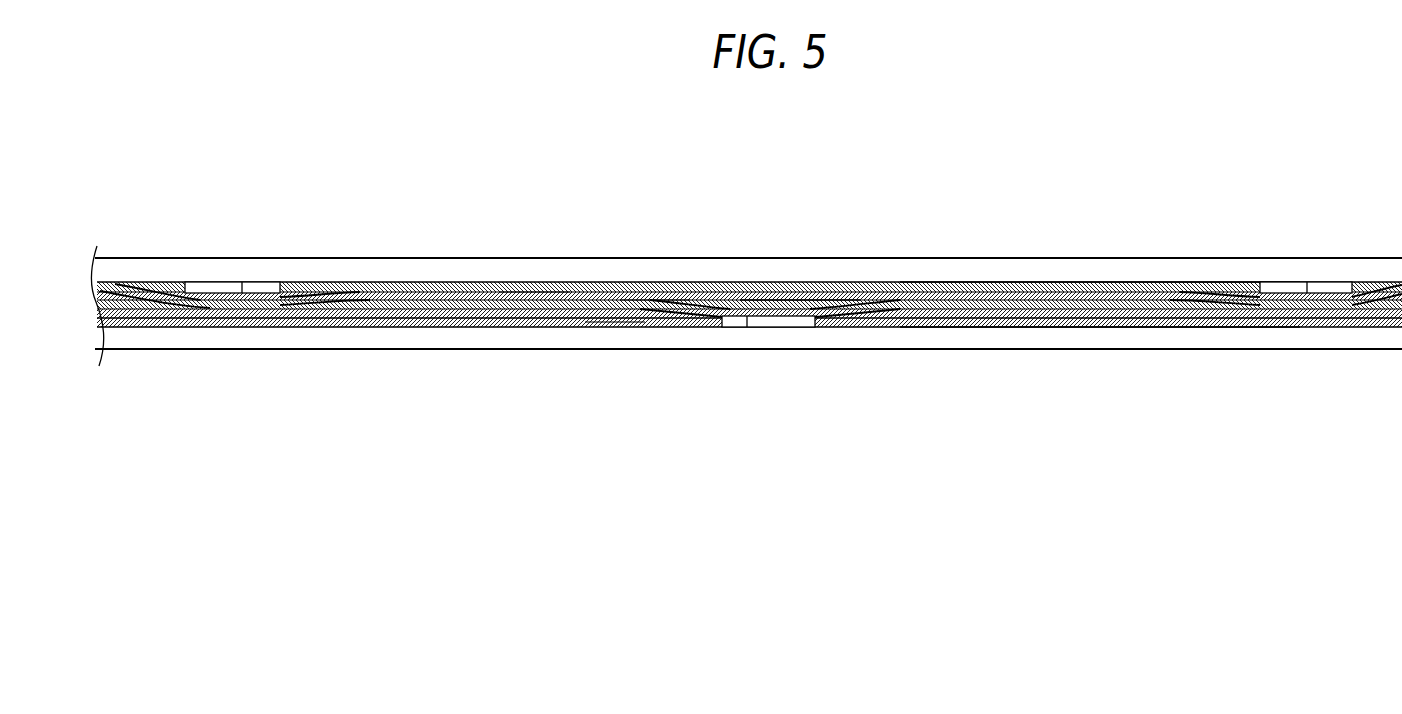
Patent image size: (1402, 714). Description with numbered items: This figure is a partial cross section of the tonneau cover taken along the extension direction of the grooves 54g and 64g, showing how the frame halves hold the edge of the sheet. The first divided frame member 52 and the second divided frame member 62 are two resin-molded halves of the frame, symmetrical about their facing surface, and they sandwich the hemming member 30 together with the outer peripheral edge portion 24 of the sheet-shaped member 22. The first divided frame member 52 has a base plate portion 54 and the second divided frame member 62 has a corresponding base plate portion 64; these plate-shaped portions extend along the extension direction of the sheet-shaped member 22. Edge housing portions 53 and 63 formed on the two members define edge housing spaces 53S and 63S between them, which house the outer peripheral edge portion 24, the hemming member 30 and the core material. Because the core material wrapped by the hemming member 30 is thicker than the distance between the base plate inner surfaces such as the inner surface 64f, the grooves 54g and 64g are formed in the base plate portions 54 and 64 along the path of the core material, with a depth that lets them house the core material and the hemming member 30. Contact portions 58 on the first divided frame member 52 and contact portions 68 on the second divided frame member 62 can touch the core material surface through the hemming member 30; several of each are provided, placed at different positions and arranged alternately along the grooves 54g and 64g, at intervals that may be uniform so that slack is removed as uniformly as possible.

The sheet-shaped member 22 is at (796, 291).
The outer peripheral edge portion 24 is at (796, 291).
The hemming member 30 is at (989, 282).
The first divided frame member 52 is at (1222, 351).
The edge housing portion 53 is at (1097, 323).
The edge housing space 53S is at (1030, 323).
The base plate portion 54 is at (851, 350).
The groove 54g is at (612, 323).
The contact portion 58 is at (747, 327).
The second divided frame member 62 is at (1190, 256).
The edge housing portion 63 is at (1072, 284).
The edge housing space 63S is at (1118, 286).
The base plate portion 64 is at (588, 258).
The inner surface of base plate portion 64f is at (535, 286).
The groove 64g is at (657, 291).
The contact portion 68 is at (242, 282).